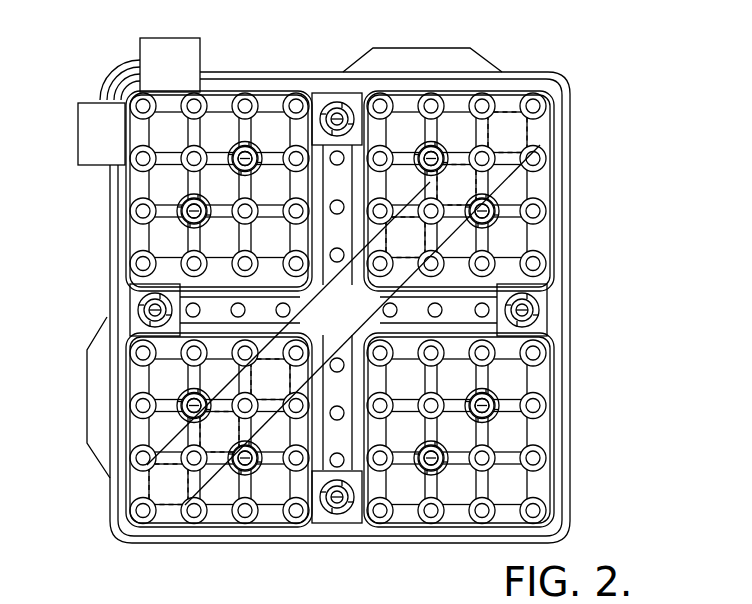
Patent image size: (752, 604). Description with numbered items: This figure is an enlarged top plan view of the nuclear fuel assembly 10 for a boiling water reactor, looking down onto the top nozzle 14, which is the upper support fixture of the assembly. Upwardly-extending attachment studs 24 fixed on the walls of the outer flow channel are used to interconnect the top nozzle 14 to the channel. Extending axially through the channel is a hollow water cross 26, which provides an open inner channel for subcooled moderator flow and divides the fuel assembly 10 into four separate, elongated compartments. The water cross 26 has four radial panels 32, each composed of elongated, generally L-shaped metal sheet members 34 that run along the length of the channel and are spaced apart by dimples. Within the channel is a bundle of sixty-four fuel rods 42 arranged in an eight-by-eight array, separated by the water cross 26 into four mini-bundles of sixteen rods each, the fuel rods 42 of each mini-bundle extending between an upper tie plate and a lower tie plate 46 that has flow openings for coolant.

The nuclear fuel assembly 10 is at (588, 78).
The top nozzle 14 is at (571, 320).
The attachment studs 24 is at (350, 110).
The water cross 26 is at (125, 345).
The radial panels 32 is at (347, 190).
The sheet members 34 is at (310, 157).
The fuel rods 42 is at (222, 105).
The lower tie plate 46 is at (271, 95).